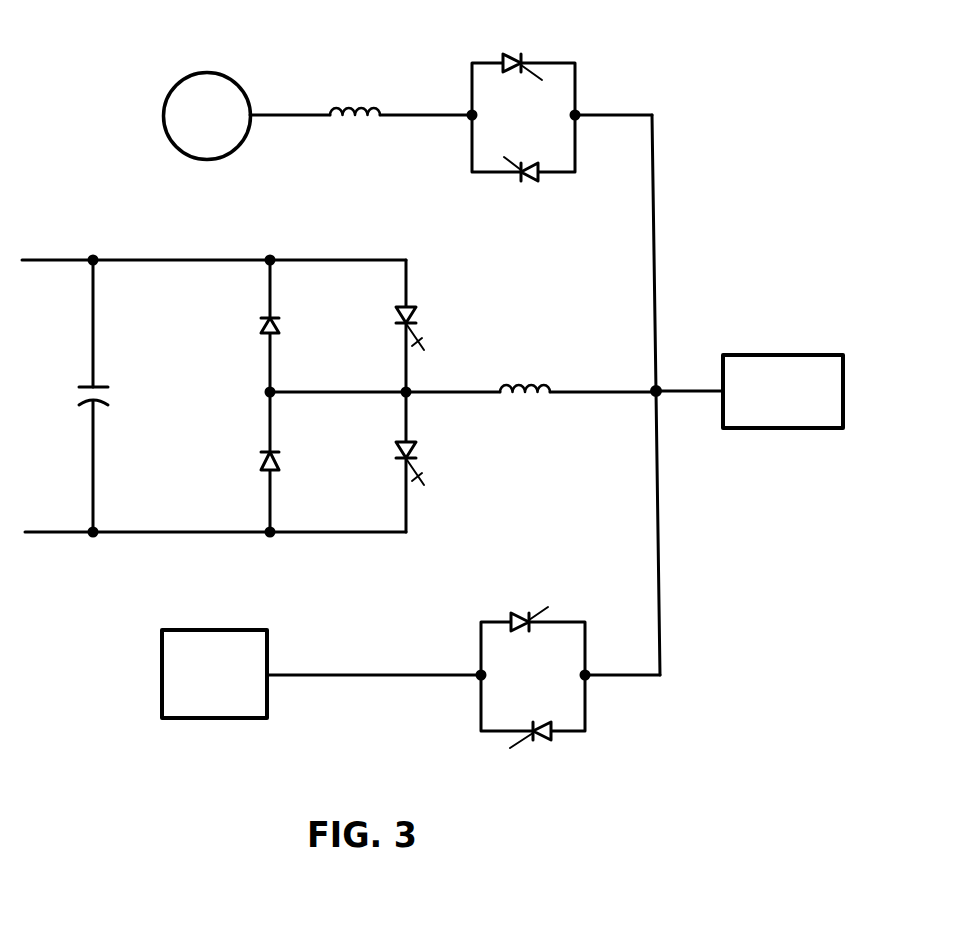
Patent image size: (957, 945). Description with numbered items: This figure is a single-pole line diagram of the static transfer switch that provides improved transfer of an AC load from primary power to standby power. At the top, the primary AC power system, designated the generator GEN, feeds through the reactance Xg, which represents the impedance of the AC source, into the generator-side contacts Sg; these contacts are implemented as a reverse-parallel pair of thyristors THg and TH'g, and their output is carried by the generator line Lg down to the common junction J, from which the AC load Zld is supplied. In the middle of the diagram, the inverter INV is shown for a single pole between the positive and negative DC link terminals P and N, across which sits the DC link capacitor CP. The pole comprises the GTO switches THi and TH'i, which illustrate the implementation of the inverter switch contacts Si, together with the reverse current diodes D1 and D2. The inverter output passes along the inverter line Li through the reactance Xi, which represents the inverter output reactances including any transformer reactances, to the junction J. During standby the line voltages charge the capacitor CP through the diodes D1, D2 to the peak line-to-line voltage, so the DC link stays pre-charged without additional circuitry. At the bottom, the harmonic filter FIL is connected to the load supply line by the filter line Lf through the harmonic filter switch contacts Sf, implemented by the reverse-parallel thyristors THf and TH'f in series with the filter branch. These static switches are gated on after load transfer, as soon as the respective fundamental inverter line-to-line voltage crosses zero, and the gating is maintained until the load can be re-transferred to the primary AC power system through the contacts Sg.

The generator GEN is at (207, 116).
The reactance Xg is at (355, 103).
The contacts Sg is at (538, 131).
The thyristor THg is at (511, 54).
The thyristor TH'g is at (547, 186).
The generator line Lg is at (654, 217).
The filter line Lf is at (659, 593).
The junction J is at (658, 388).
The AC load Zld is at (786, 352).
The inverter INV is at (197, 446).
The positive DC link terminal P is at (93, 260).
The negative DC link terminal N is at (93, 535).
The DC link capacitor CP is at (79, 390).
The reverse current diode D1 is at (259, 320).
The reverse current diode D2 is at (259, 464).
The inverter switch contacts Si is at (468, 365).
The GTO switch THi is at (395, 318).
The GTO switch TH'i is at (378, 461).
The inverter line Li is at (613, 395).
The reactance Xi is at (532, 384).
The harmonic filter FIL is at (214, 674).
The harmonic filter switch contacts Sf is at (548, 688).
The thyristor THf is at (520, 612).
The thyristor TH'f is at (555, 747).